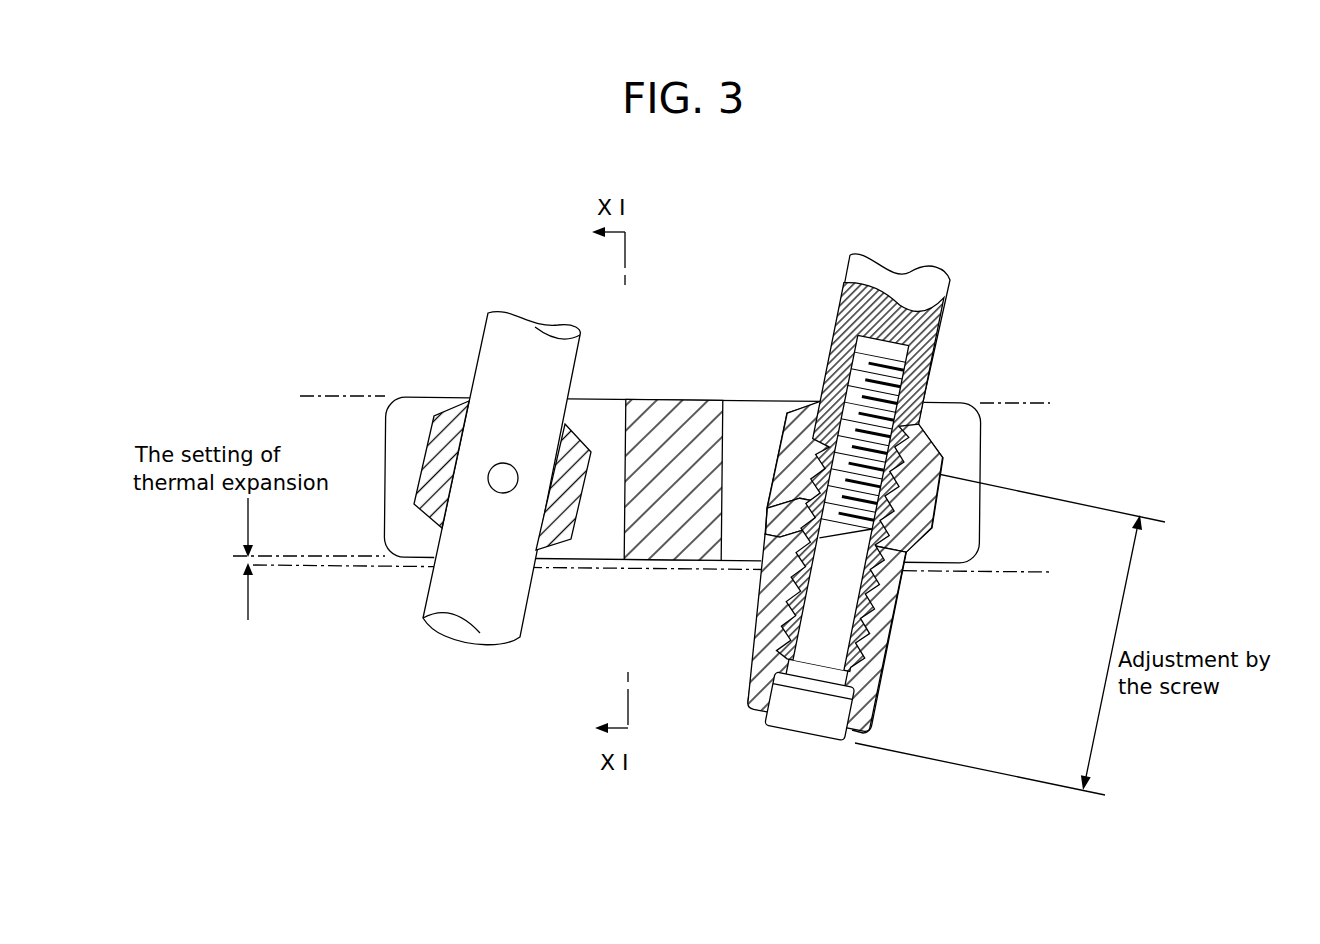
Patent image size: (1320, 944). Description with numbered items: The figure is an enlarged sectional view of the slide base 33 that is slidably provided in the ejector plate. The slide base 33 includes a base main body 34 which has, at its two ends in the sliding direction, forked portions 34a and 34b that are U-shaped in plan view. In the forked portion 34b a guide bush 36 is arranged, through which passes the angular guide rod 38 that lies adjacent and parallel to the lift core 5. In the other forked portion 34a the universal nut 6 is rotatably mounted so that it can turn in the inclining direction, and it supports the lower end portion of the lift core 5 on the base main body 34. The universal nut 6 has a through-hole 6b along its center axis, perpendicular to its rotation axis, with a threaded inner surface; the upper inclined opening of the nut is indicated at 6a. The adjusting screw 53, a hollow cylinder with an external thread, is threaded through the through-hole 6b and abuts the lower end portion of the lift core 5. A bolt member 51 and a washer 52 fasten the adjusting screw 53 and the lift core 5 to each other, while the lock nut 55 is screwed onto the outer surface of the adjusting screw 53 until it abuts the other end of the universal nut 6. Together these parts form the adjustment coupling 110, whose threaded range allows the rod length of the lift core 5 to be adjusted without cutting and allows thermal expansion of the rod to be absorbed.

The lift core 5 is at (948, 296).
The universal nut 6 is at (790, 414).
The upper portion of nut 6a is at (827, 359).
The through-hole 6b is at (767, 574).
The slide base 33 is at (642, 576).
The base main body 34 is at (662, 404).
The forked portion 34a is at (982, 443).
The forked portion 34b is at (396, 549).
The guide bush 36 is at (441, 417).
The guide rod 38 is at (505, 341).
The bolt member 51 is at (780, 724).
The washer 52 is at (835, 661).
The adjusting screw 53 is at (872, 638).
The lock nut 55 is at (753, 662).
The adjustment coupling 110 is at (888, 696).